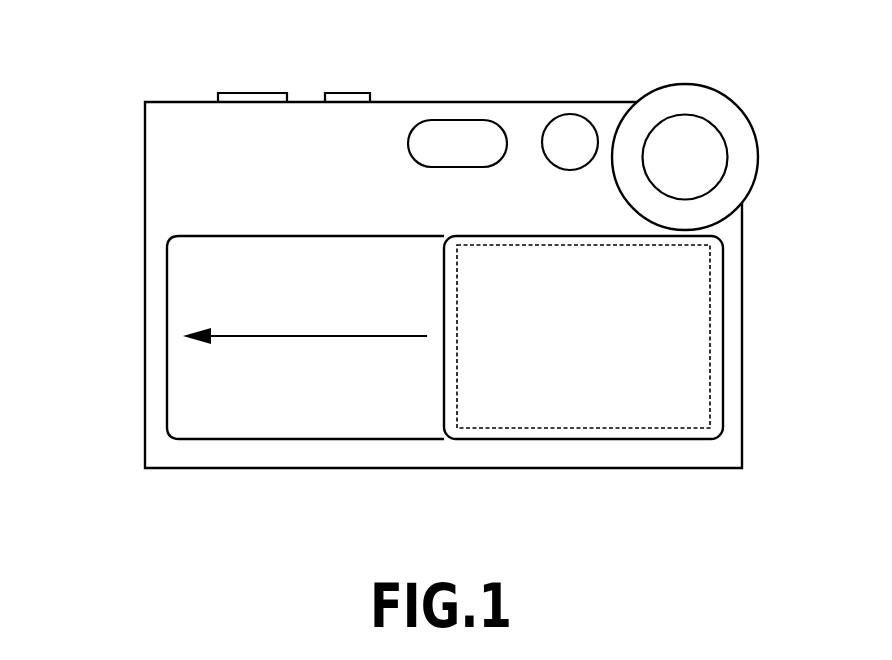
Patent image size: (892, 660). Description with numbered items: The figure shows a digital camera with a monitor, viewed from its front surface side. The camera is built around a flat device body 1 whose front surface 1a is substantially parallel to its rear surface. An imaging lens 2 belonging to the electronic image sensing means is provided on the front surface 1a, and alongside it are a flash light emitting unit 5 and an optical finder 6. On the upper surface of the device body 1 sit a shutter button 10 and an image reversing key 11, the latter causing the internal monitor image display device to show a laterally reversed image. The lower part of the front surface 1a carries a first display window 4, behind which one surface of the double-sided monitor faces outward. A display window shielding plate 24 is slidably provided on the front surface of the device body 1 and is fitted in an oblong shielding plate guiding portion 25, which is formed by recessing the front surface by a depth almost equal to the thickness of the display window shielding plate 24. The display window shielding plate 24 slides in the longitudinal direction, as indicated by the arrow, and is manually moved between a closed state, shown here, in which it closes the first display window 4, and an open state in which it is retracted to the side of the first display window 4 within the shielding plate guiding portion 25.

The device body 1 is at (132, 127).
The front surface 1a is at (165, 215).
The imaging lens 2 is at (687, 137).
The first display window 4 is at (683, 337).
The flash light emitting unit 5 is at (453, 135).
The optical finder 6 is at (567, 135).
The shutter button 10 is at (250, 92).
The image reversing key 11 is at (348, 92).
The display window shielding plate 24 is at (580, 410).
The shielding plate guiding portion 25 is at (310, 412).